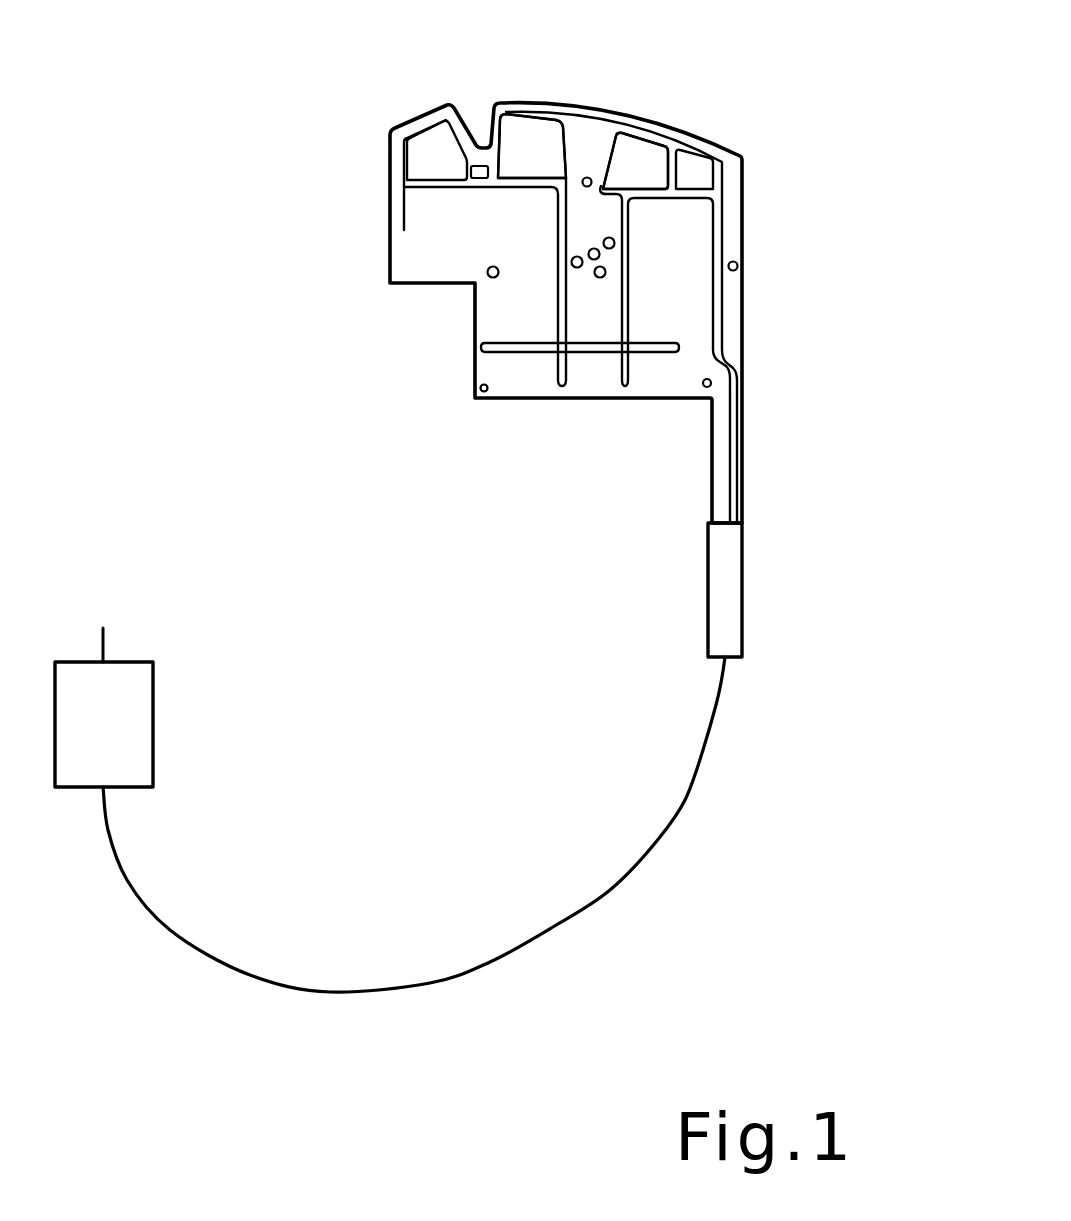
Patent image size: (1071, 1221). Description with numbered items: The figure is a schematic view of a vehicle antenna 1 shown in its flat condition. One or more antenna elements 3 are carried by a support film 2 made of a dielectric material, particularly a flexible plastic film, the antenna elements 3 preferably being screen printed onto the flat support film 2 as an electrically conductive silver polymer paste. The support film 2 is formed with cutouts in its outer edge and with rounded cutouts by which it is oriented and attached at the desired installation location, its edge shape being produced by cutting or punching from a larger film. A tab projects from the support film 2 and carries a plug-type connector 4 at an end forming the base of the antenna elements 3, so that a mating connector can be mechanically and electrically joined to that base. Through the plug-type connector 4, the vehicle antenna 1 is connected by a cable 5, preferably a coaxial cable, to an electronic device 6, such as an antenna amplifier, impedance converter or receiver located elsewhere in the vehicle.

The vehicle antenna 1 is at (322, 460).
The support film 2 is at (742, 295).
The antenna elements 3 is at (557, 107).
The plug-type connector 4 is at (738, 562).
The cable 5 is at (658, 837).
The electronic device 6 is at (90, 733).